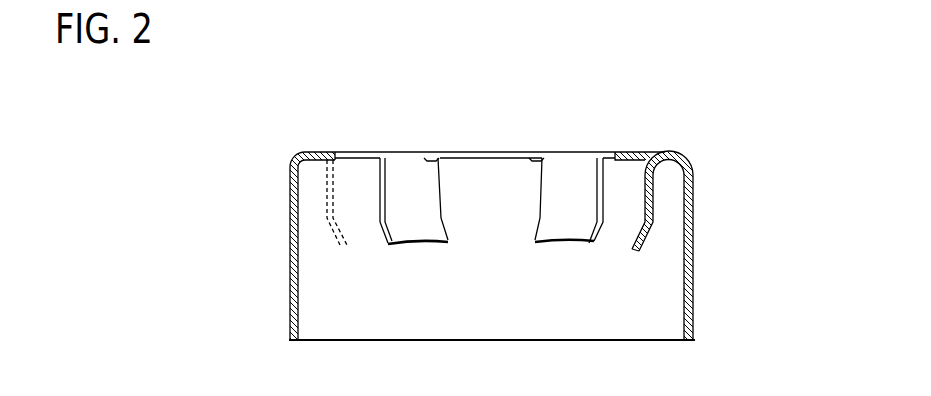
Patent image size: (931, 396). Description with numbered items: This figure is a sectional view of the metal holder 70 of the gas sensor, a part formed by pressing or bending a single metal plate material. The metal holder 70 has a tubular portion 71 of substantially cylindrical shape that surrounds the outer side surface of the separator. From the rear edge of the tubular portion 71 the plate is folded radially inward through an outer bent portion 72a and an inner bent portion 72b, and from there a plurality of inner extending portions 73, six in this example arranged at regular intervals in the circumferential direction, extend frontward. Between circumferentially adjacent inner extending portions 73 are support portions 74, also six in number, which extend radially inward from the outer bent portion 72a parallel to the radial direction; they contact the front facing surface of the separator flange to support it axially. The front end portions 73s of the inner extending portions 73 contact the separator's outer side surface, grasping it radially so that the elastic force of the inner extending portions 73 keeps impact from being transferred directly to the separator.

The metal holder 70 is at (753, 190).
The tubular portion 71 is at (292, 240).
The outer bent portion 72a is at (688, 158).
The inner bent portion 72b is at (652, 156).
The inner extending portion 73 is at (410, 181).
The front end portion 73s is at (545, 233).
The support portion 74 is at (485, 152).